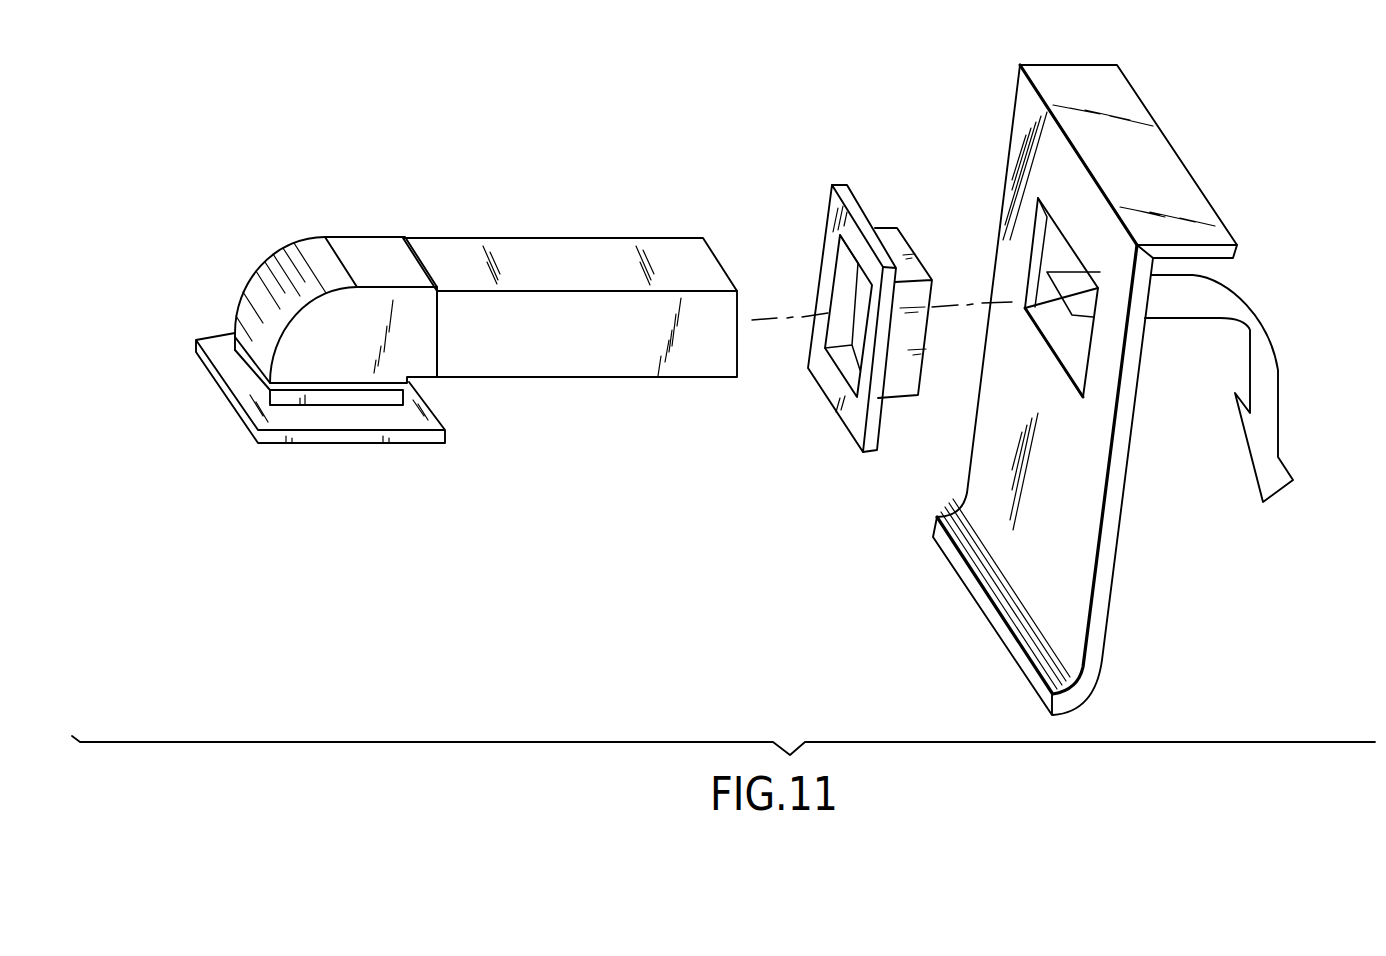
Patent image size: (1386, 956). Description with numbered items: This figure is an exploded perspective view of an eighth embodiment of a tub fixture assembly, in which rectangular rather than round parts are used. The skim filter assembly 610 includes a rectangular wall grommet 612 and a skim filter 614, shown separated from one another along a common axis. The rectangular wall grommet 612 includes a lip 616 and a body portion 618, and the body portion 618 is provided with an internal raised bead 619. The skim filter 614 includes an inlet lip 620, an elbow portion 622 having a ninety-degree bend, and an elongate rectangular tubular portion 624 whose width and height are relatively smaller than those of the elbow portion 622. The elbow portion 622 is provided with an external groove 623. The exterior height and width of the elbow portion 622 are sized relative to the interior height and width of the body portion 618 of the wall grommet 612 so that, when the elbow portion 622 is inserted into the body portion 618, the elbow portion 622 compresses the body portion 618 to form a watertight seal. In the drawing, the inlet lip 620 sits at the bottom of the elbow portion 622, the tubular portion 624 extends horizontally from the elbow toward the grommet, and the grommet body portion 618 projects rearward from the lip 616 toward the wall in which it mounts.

The skim filter assembly 610 is at (697, 140).
The rectangular wall grommet 612 is at (857, 152).
The skim filter 614 is at (437, 205).
The lip 616 is at (834, 183).
The body portion 618 is at (897, 231).
The internal raised bead 619 is at (850, 290).
The inlet lip 620 is at (197, 339).
The elbow portion 622 is at (312, 233).
The external groove 623 is at (234, 337).
The elongate rectangular tubular portion 624 is at (467, 238).